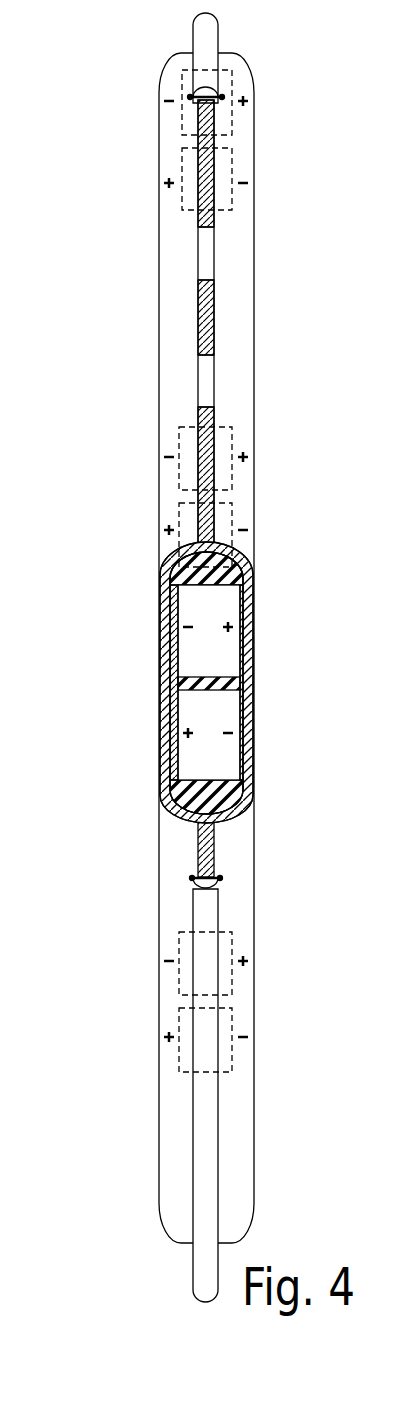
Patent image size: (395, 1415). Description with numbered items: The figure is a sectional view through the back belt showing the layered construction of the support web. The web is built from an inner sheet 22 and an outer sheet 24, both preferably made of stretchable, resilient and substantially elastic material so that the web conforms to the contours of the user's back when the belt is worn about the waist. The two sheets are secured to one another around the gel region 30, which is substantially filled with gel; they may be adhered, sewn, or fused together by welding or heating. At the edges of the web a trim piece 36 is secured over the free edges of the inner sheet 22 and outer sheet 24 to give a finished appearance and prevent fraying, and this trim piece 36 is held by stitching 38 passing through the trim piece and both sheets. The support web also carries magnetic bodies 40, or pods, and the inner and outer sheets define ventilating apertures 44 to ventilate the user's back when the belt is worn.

The inner sheet 22 is at (254, 1133).
The outer sheet 24 is at (163, 1142).
The gel region 30 is at (240, 800).
The trim piece 36 is at (205, 32).
The stitching 38 is at (200, 97).
The magnetic bodies 40 is at (182, 148).
The ventilating apertures 44 is at (203, 258).